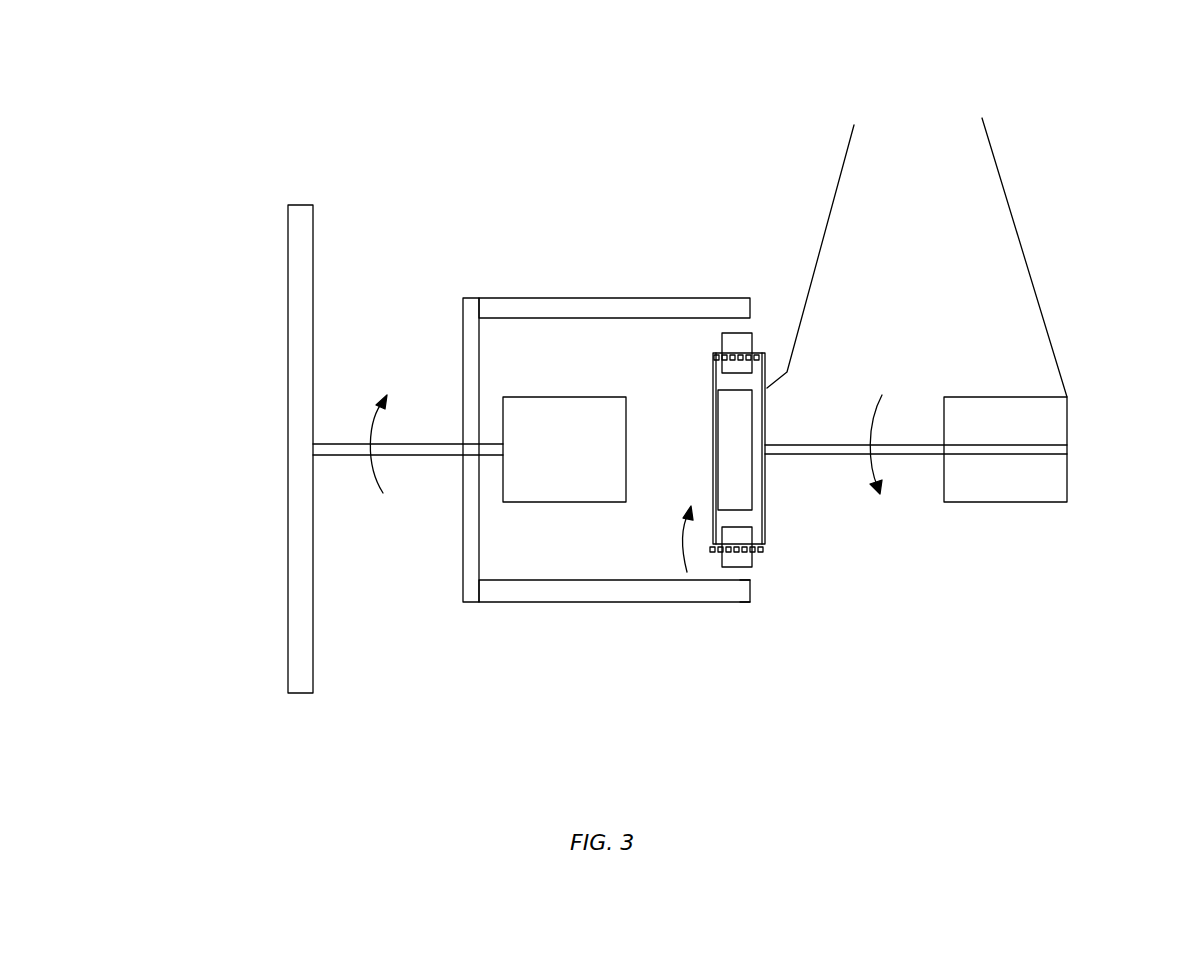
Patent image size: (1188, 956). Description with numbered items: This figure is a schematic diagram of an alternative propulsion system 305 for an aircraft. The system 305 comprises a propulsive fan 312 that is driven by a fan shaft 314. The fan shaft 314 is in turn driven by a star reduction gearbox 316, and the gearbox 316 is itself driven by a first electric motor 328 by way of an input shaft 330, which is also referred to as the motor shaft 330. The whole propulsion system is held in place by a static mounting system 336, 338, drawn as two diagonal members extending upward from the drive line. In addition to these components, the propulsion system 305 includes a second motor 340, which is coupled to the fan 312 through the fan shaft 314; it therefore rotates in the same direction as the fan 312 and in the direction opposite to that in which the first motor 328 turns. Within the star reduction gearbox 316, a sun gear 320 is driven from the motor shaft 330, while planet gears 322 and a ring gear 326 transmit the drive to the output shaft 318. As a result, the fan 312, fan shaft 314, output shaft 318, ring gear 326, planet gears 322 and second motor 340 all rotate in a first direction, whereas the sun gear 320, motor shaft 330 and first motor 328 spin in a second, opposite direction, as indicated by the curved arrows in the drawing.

The propulsion system 305 is at (629, 150).
The propulsive fan 312 is at (288, 255).
The fan shaft 314 is at (420, 456).
The star reduction gearbox 316 is at (733, 610).
The output shaft 318 is at (463, 330).
The sun gear 320 is at (730, 407).
The planet gears 322 is at (740, 568).
The ring gear 326 is at (752, 590).
The first electric motor 328 is at (1067, 475).
The input shaft 330 is at (818, 444).
The static mounting system 336 is at (832, 204).
The static mounting system 338 is at (1008, 197).
The second motor 340 is at (563, 502).